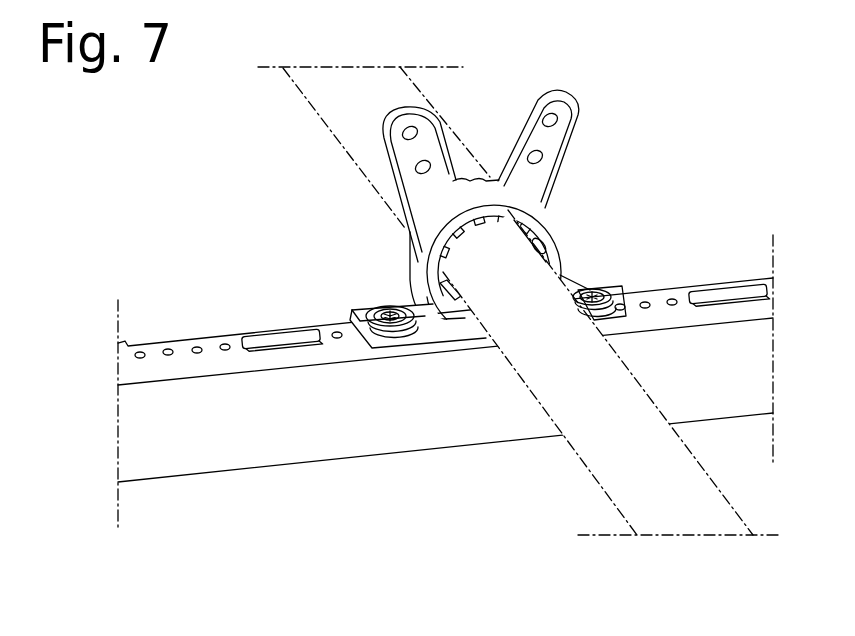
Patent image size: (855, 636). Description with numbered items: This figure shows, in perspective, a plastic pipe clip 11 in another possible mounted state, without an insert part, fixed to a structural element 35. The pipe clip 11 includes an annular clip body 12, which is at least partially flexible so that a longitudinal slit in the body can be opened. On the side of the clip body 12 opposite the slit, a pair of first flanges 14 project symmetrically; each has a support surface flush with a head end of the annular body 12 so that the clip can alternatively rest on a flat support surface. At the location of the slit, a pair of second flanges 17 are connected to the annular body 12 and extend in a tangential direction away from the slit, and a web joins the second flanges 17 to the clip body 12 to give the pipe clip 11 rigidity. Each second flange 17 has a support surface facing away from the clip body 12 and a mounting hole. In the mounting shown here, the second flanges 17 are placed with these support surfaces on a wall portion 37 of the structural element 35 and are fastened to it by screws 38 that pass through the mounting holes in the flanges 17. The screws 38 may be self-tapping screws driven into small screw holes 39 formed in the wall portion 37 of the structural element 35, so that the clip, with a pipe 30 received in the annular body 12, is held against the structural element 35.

The tube 30 is at (342, 95).
The first flanges 14 is at (407, 152).
The annular clip body 12 is at (432, 234).
The pipe clip 11 is at (566, 225).
The screws 38 is at (390, 316).
The wall portion 37 is at (678, 292).
The screw holes 39 is at (225, 347).
The structural element 35 is at (297, 433).
The second flanges 17 is at (433, 325).